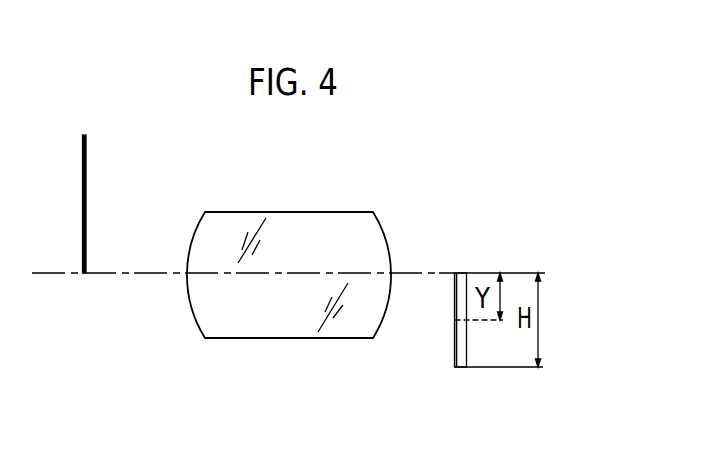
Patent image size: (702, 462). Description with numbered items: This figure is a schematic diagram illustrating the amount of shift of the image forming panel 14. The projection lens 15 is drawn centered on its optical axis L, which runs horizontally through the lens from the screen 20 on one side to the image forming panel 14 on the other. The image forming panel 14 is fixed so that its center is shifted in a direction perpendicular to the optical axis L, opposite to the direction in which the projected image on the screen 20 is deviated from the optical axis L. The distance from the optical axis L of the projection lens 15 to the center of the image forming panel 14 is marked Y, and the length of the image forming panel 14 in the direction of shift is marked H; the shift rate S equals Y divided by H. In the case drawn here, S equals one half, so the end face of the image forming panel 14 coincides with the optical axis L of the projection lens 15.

The image forming panel 14 is at (459, 277).
The projection lens 15 is at (280, 212).
The screen 20 is at (86, 143).
The optical axis L is at (422, 273).